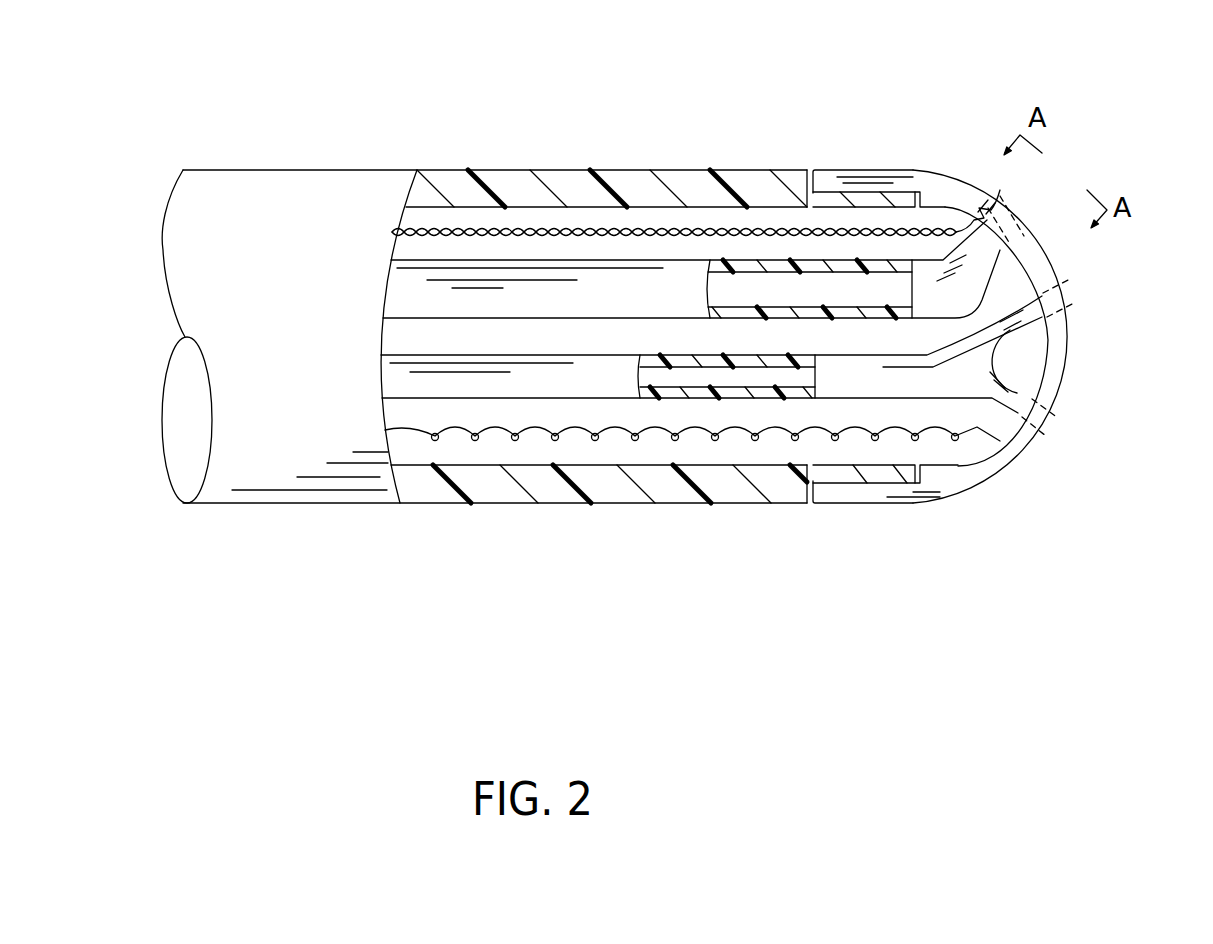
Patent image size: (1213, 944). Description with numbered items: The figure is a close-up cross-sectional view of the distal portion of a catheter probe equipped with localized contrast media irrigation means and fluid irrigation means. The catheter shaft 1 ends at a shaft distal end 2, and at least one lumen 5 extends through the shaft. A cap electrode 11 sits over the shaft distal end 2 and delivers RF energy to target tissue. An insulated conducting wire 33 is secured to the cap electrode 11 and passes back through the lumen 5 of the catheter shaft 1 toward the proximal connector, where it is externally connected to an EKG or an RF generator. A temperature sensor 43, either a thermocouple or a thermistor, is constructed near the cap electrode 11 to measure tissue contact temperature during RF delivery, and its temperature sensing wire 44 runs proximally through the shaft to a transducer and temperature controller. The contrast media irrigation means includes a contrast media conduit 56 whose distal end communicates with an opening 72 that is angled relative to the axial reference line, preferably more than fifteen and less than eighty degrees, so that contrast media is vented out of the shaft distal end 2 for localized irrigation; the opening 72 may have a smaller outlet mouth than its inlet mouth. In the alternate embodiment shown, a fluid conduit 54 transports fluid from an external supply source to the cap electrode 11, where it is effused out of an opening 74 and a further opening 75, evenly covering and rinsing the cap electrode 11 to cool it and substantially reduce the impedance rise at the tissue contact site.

The catheter shaft 1 is at (312, 165).
The shaft distal end 2 is at (810, 163).
The lumen 5 is at (613, 217).
The cap electrode 11 is at (943, 165).
The insulated conducting wire 33 is at (460, 432).
The temperature sensor 43 is at (1003, 183).
The temperature sensing wire 44 is at (487, 223).
The fluid conduit 54 is at (607, 403).
The contrast media conduit 56 is at (667, 260).
The opening 72 is at (1030, 200).
The opening 74 is at (1085, 290).
The opening 75 is at (1062, 432).